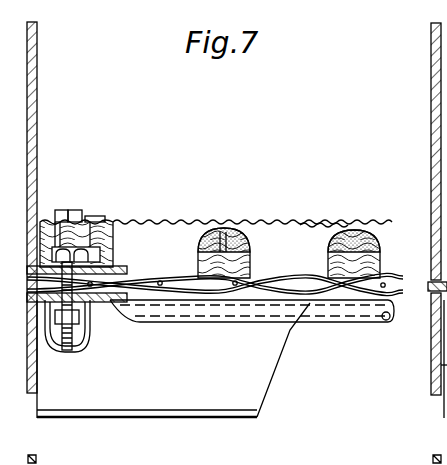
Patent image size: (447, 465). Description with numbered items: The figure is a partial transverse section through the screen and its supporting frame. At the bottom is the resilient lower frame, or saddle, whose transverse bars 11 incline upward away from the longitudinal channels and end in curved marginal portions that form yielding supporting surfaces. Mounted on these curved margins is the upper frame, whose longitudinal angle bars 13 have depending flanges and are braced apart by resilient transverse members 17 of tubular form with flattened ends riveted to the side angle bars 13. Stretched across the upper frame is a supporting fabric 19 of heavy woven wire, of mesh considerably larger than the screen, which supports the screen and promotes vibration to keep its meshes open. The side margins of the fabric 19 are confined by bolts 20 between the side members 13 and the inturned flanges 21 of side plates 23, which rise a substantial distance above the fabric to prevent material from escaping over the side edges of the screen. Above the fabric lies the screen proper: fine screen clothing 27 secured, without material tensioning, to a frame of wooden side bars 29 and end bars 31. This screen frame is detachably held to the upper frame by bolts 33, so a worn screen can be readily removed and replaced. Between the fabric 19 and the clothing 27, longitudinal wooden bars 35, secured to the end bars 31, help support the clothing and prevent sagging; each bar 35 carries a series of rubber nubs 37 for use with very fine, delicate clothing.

The transverse bar 11 is at (280, 355).
The longitudinal angle bar 13 is at (40, 367).
The transverse brace member 17 is at (237, 322).
The supporting fabric 19 is at (190, 296).
The bolt 20 is at (110, 250).
The inturned flange 21 is at (125, 270).
The side plate 23 is at (40, 130).
The screen clothing 27 is at (270, 222).
The side bar 29 is at (108, 222).
The end bar 31 is at (306, 236).
The bolt 33 is at (71, 215).
The bar 35 is at (250, 265).
The rubber nub 37 is at (210, 228).